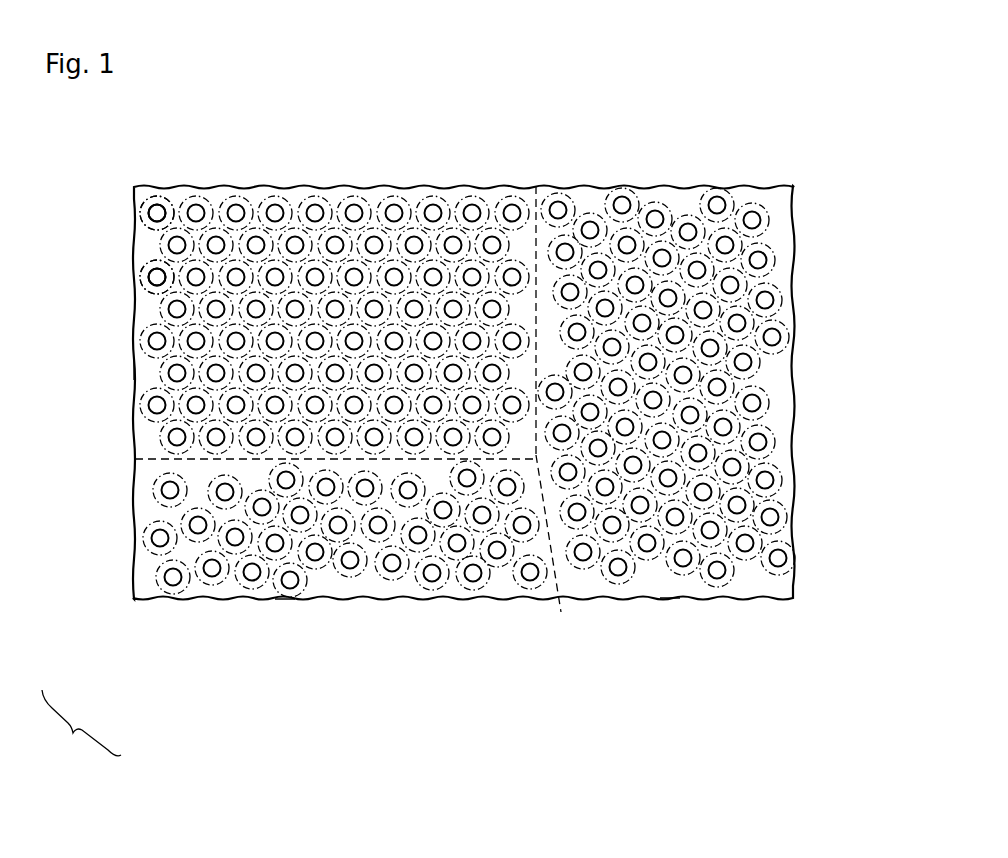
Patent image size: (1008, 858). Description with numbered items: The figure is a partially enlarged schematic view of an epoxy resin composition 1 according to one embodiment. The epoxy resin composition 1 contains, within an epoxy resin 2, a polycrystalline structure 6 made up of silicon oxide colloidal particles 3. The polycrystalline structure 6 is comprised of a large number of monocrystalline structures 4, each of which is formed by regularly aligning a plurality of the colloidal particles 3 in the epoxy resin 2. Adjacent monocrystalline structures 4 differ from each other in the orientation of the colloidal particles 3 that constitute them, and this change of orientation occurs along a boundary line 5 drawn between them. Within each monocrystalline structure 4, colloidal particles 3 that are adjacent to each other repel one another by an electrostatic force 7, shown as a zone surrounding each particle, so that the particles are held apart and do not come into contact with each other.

The epoxy resin composition 1 is at (808, 182).
The epoxy resin 2 is at (217, 202).
The silicon oxide colloidal particle 3 is at (148, 273).
The monocrystalline structure 4 is at (132, 373).
The boundary line 5 is at (536, 244).
The polycrystalline structure 6 is at (81, 724).
The electrostatic force 7 is at (133, 193).